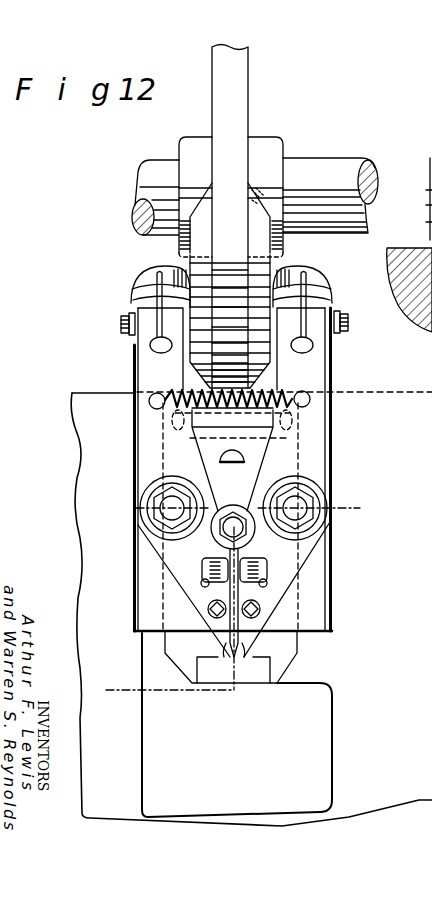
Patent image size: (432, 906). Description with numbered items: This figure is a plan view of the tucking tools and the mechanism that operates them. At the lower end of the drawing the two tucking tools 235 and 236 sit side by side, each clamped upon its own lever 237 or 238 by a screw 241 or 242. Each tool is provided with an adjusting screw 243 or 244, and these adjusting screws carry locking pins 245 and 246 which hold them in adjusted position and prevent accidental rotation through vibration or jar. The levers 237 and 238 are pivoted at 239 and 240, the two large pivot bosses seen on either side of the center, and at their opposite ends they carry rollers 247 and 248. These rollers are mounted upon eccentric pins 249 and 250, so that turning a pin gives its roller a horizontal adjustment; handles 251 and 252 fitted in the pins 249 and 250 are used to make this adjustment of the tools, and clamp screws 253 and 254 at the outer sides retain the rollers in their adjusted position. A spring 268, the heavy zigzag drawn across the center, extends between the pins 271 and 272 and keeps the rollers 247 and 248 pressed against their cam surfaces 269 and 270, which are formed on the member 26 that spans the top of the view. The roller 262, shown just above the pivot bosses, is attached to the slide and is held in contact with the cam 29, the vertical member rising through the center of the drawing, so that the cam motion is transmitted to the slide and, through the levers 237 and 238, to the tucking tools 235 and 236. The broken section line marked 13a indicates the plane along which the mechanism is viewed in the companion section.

The cam 29 is at (212, 119).
The cross beam 26 is at (336, 165).
The cam surface 269 is at (178, 193).
The cam surface 270 is at (287, 207).
The handle 251 is at (139, 271).
The handle 252 is at (299, 260).
The roller 247 is at (134, 281).
The roller 248 is at (324, 290).
The eccentric pin 249 is at (137, 300).
The eccentric pin 250 is at (332, 305).
The clamp screw 253 is at (120, 323).
The clamp screw 254 is at (340, 322).
The spring 268 is at (190, 386).
The pin 271 is at (149, 406).
The pin 272 is at (310, 405).
The roller 262 is at (222, 465).
The pivot 239 is at (136, 508).
The pivot 240 is at (332, 520).
The lever 237 is at (155, 549).
The lever 238 is at (318, 546).
The locking pin 245 is at (202, 582).
The locking pin 246 is at (268, 582).
The adjusting screw 243 is at (207, 598).
The adjusting screw 244 is at (262, 600).
The screw 241 is at (208, 612).
The screw 242 is at (260, 614).
The tucking tool 235 is at (230, 652).
The tucking tool 236 is at (249, 657).
The section line 13a is at (360, 483).